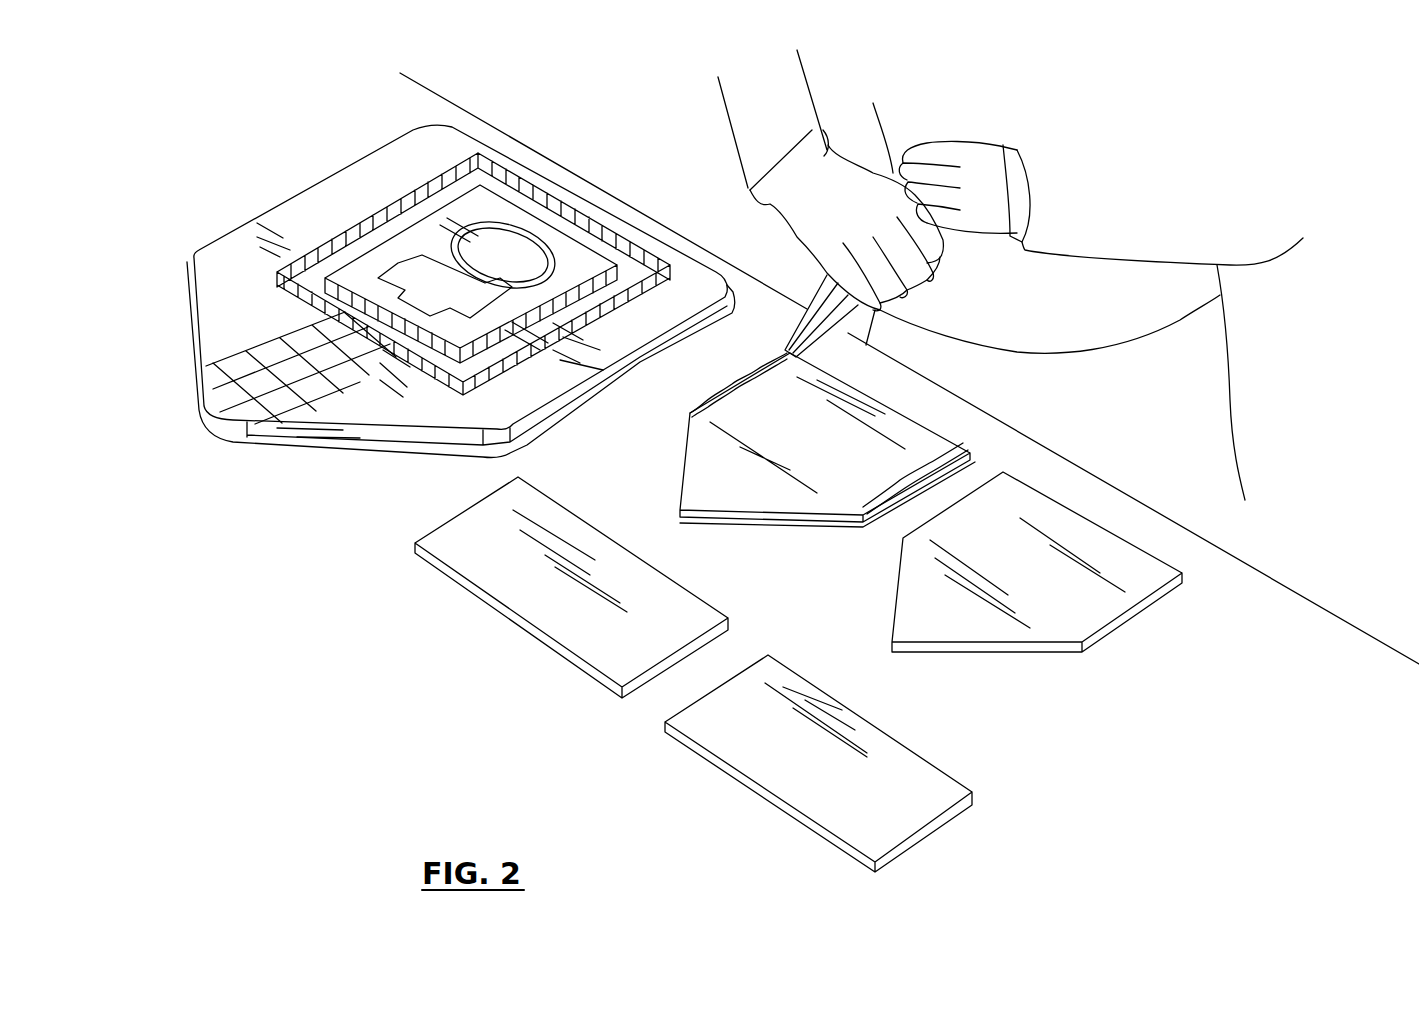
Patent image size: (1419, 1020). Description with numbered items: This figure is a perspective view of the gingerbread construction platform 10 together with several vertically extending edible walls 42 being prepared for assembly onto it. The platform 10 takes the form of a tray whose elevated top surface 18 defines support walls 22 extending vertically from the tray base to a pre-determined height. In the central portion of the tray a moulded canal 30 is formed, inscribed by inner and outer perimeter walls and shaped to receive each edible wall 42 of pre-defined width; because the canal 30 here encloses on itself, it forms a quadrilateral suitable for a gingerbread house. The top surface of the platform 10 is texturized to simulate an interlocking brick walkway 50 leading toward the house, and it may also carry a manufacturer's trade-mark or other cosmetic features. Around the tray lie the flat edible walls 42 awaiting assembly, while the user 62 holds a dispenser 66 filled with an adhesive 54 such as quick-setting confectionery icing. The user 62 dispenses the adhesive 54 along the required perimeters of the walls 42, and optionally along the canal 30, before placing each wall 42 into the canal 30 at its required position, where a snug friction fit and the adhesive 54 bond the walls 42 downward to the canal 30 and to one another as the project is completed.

The gingerbread construction platform 10 is at (177, 463).
The elevated top surface 18 is at (247, 317).
The support walls 22 is at (373, 437).
The moulded canal 30 is at (350, 229).
The vertically extending edible wall 42 is at (890, 430).
The interlocking brick walkway 50 is at (259, 385).
The adhesive 54 is at (716, 394).
The user 62 is at (1170, 250).
The dispenser 66 is at (822, 288).